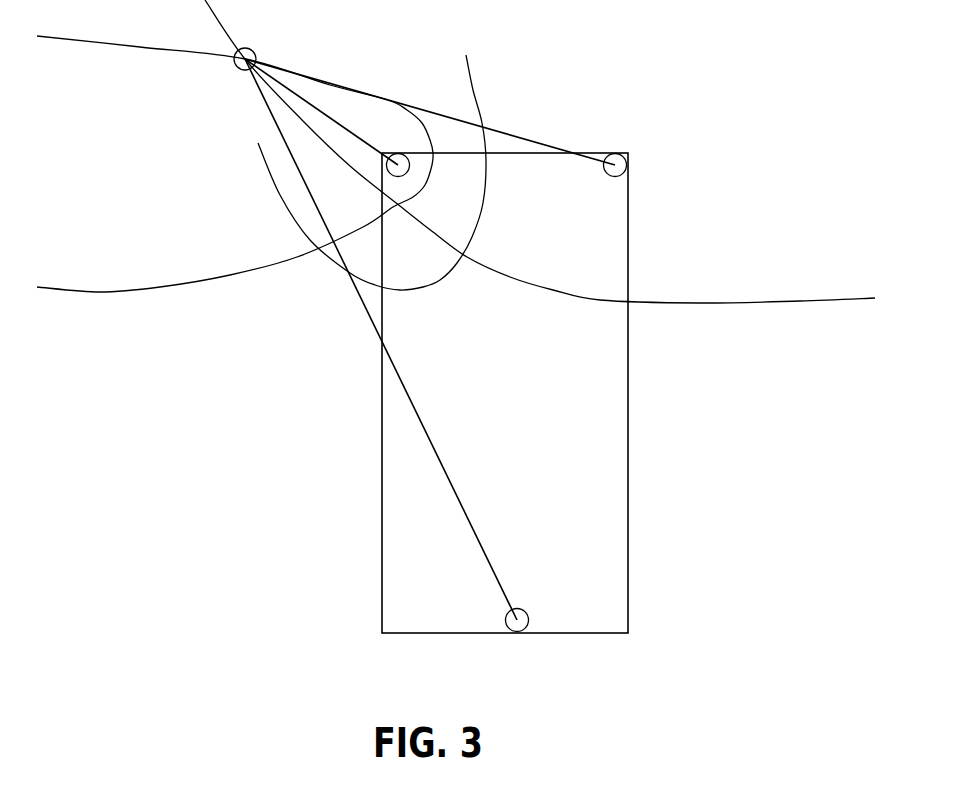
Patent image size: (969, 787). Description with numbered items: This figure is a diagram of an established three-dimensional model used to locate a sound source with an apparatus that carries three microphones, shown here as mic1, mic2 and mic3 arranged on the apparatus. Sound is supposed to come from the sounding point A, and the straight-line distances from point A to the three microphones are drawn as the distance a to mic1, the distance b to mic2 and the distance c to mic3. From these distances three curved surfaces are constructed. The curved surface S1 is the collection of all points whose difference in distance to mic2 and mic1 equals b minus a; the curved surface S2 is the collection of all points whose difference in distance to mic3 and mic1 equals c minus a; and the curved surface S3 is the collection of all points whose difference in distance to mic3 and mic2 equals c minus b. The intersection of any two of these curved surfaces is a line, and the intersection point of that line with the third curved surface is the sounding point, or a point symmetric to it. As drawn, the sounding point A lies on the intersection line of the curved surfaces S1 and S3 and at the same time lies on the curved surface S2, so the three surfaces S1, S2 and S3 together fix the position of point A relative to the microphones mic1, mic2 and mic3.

The sounding point A is at (241, 81).
The straight-line distance from Point A to mic1 a is at (321, 112).
The straight-line distance from Point A to mic2 b is at (430, 112).
The straight-line distance from Point A to mic3 c is at (381, 339).
The first microphone mic1 is at (425, 178).
The second microphone mic2 is at (588, 178).
The third microphone mic3 is at (545, 620).
The three-dimensional curved surface S1 is at (235, 164).
The three-dimensional curved surface S2 is at (372, 172).
The three-dimensional curved surface S3 is at (540, 151).